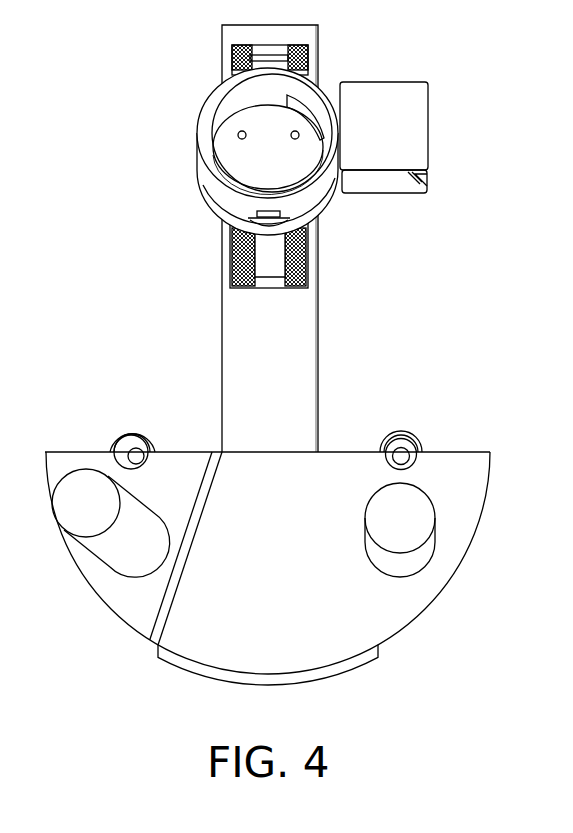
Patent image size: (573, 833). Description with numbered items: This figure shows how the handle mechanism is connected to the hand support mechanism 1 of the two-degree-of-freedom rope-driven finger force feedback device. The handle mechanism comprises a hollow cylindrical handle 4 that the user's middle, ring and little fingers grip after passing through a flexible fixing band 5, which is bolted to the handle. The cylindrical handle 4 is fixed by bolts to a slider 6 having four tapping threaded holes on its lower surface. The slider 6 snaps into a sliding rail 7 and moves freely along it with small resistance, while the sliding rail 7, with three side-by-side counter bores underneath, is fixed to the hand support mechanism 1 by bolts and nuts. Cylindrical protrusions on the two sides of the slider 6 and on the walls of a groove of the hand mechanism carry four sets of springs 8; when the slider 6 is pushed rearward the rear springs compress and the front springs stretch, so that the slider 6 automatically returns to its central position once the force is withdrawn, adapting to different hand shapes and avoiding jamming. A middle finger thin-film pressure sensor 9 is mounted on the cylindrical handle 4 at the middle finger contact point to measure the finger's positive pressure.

The hand support mechanism 1 is at (256, 413).
The cylindrical handle 4 is at (230, 90).
The flexible fixing band 5 is at (398, 122).
The slider 6 is at (253, 232).
The sliding rail 7 is at (268, 259).
The springs 8 is at (297, 268).
The middle finger thin-film pressure sensor 9 is at (285, 220).